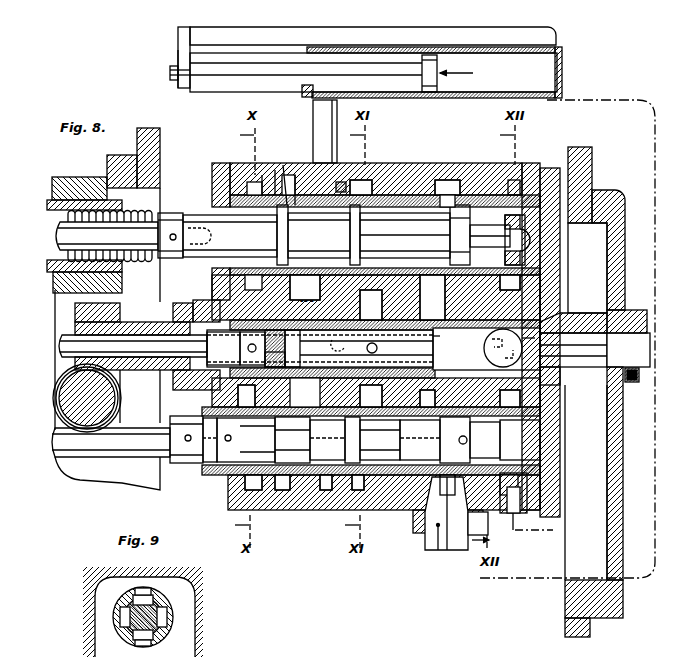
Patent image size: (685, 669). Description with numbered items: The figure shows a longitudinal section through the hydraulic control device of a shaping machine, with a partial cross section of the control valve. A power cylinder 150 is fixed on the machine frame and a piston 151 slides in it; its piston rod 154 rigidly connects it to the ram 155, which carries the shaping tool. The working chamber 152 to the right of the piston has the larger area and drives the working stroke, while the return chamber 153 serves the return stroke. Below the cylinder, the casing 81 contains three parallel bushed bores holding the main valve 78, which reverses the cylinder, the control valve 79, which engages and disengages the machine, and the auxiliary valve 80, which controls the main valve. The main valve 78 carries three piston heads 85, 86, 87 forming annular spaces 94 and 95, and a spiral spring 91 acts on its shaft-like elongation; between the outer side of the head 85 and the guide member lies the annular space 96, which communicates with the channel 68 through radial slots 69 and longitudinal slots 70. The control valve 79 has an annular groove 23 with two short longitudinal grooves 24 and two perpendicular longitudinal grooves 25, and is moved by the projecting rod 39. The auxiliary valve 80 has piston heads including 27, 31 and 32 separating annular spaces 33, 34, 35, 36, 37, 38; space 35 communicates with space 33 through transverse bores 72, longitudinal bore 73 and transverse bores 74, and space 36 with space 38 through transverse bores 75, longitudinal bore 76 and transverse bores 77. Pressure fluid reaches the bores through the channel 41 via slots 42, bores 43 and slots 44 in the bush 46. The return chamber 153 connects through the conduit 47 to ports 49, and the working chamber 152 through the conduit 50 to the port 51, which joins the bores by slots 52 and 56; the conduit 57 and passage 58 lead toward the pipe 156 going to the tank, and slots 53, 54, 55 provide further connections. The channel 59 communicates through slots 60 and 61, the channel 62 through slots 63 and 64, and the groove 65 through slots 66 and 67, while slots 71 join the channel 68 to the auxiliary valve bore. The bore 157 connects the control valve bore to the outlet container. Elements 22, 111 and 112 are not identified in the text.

In FIG. 8, the bore 22 is at (501, 178).
In FIG. 8, the annular groove 23 is at (292, 330).
In FIG. 9, the longitudinal grooves 24 is at (121, 626).
In FIG. 8, the longitudinal grooves 25 is at (436, 353).
In FIG. 9, the longitudinal grooves 25 is at (130, 599).
In FIG. 8, the piston head 27 is at (278, 406).
In FIG. 8, the piston head 31 is at (430, 404).
In FIG. 8, the piston head 32 is at (499, 440).
In FIG. 8, the annular space 33 is at (205, 408).
In FIG. 8, the annular space 34 is at (262, 499).
In FIG. 8, the annular space 35 is at (320, 511).
In FIG. 8, the annular space 36 is at (356, 500).
In FIG. 8, the annular space 37 is at (385, 498).
In FIG. 8, the annular space 38 is at (278, 200).
In FIG. 8, the rod 39 is at (68, 335).
In FIG. 8, the channel 41 is at (388, 276).
In FIG. 8, the slots 42 is at (360, 185).
In FIG. 8, the bores 43 is at (378, 348).
In FIG. 8, the slots 44 is at (375, 413).
In FIG. 8, the bush 46 is at (520, 413).
In FIG. 8, the conduit 47 is at (318, 125).
In FIG. 8, the ports 49 is at (343, 226).
In FIG. 8, the conduit 50 is at (654, 135).
In FIG. 8, the port 51 is at (470, 282).
In FIG. 8, the slots 52 is at (456, 176).
In FIG. 8, the slots 53 is at (521, 180).
In FIG. 8, the slots 54 is at (462, 497).
In FIG. 8, the slots 55 is at (487, 463).
In FIG. 8, the slots 56 is at (457, 470).
In FIG. 8, the conduit 57 is at (565, 318).
In FIG. 8, the passage 58 is at (512, 400).
In FIG. 8, the channel 59 is at (485, 356).
In FIG. 8, the slots 60 is at (499, 355).
In FIG. 8, the slots 61 is at (440, 306).
In FIG. 8, the channel 62 is at (306, 288).
In FIG. 9, the channel 62 is at (150, 578).
In FIG. 8, the slots 63 is at (292, 433).
In FIG. 8, the slots 64 is at (276, 330).
In FIG. 9, the slots 64 is at (140, 592).
In FIG. 8, the groove 65 is at (287, 205).
In FIG. 8, the slots 66 is at (293, 208).
In FIG. 8, the slots 67 is at (283, 492).
In FIG. 8, the channel 68 is at (240, 166).
In FIG. 8, the radial slots 69 is at (238, 274).
In FIG. 8, the longitudinal slots 70 is at (262, 256).
In FIG. 8, the slots 71 is at (232, 492).
In FIG. 8, the transverse bores 72 is at (305, 490).
In FIG. 8, the longitudinal bore 73 is at (230, 466).
In FIG. 8, the transverse bores 74 is at (200, 464).
In FIG. 8, the transverse bores 75 is at (323, 485).
In FIG. 8, the longitudinal bore 76 is at (502, 452).
In FIG. 8, the transverse bores 77 is at (468, 439).
In FIG. 8, the main valve 78 is at (183, 212).
In FIG. 8, the control valve 79 is at (278, 362).
In FIG. 8, the auxiliary valve 80 is at (278, 500).
In FIG. 8, the casing 81 is at (262, 182).
In FIG. 8, the piston head 85 is at (292, 223).
In FIG. 8, the piston head 86 is at (367, 216).
In FIG. 8, the piston head 87 is at (462, 221).
In FIG. 8, the spiral spring 91 is at (155, 256).
In FIG. 8, the annular space 94 is at (378, 182).
In FIG. 8, the annular space 95 is at (452, 180).
In FIG. 8, the annular space 96 is at (277, 223).
In FIG. 8, the shaft 111 is at (118, 447).
In FIG. 8, the bearing 112 is at (112, 398).
In FIG. 8, the power cylinder 150 is at (558, 66).
In FIG. 8, the piston 151 is at (430, 96).
In FIG. 8, the working chamber 152 is at (530, 82).
In FIG. 8, the return chamber 153 is at (322, 55).
In FIG. 8, the piston rod 154 is at (211, 70).
In FIG. 8, the ram 155 is at (200, 31).
In FIG. 8, the pipe 156 is at (530, 531).
In FIG. 8, the bore 157 is at (492, 364).